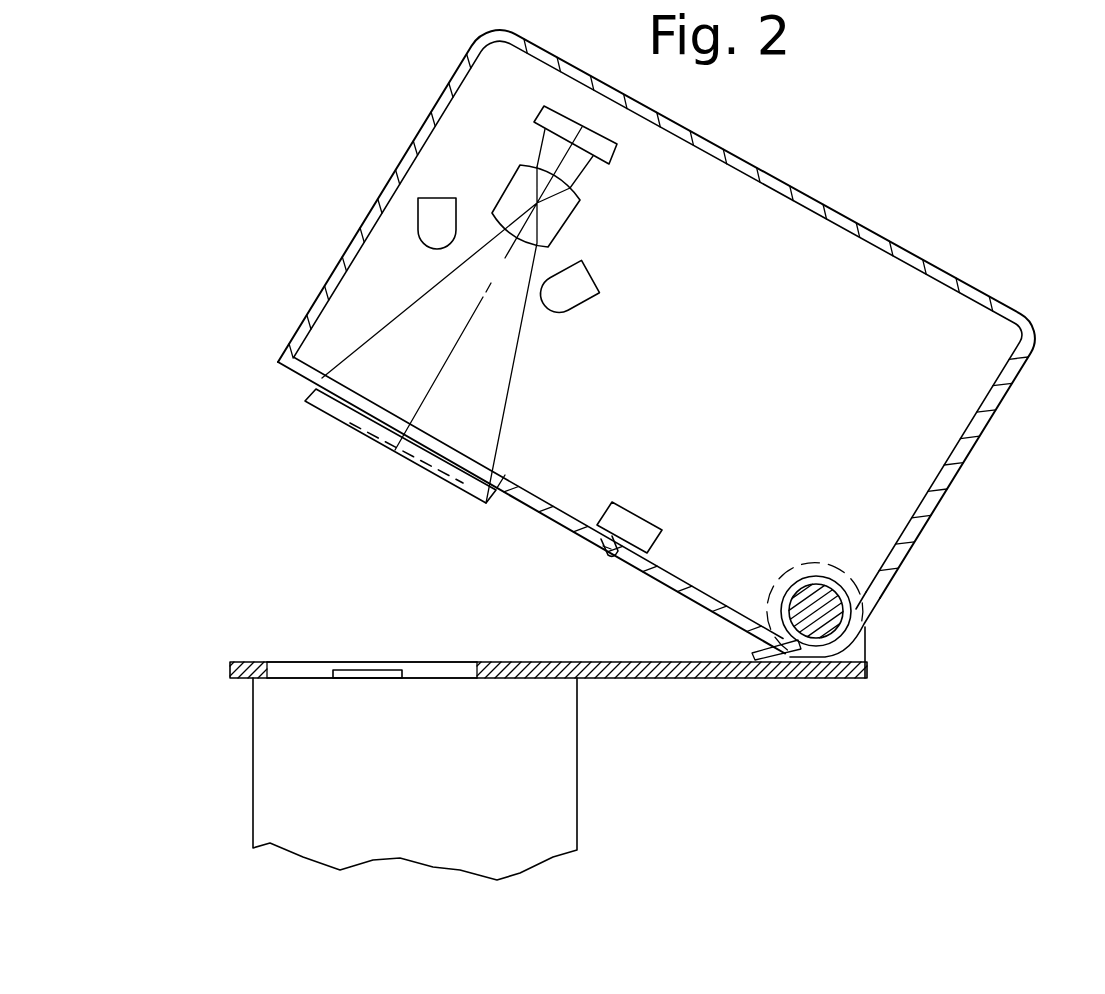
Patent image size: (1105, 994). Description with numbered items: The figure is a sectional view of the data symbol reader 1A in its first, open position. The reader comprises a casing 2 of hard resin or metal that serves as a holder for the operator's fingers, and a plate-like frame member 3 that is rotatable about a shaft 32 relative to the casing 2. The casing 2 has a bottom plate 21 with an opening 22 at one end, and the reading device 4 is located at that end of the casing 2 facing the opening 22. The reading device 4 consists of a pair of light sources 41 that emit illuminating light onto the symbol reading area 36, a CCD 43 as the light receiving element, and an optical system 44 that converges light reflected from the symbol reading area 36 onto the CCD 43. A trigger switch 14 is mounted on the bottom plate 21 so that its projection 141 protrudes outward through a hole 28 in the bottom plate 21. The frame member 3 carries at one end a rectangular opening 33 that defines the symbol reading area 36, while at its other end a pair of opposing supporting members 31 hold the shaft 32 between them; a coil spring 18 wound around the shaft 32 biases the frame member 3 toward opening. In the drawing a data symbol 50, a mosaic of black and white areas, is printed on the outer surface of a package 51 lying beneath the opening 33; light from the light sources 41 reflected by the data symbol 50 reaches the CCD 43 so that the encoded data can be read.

The data symbol reader 1A is at (1028, 207).
The casing 2 is at (880, 235).
The bottom plate 21 is at (310, 373).
The opening 22 is at (352, 418).
The symbol reading area 36 is at (377, 443).
The reading device 4 is at (506, 272).
The light sources 41 is at (430, 217).
The CCD 43 is at (617, 155).
The optical system 44 is at (555, 217).
The trigger switch 14 is at (630, 510).
The projection 141 is at (603, 555).
The hole 28 is at (610, 563).
The coil spring 18 is at (875, 590).
The shaft 32 is at (823, 616).
The supporting members 31 is at (860, 648).
The frame member 3 is at (243, 680).
The opening 33 is at (450, 680).
The data symbol 50 is at (377, 670).
The package 51 is at (270, 803).